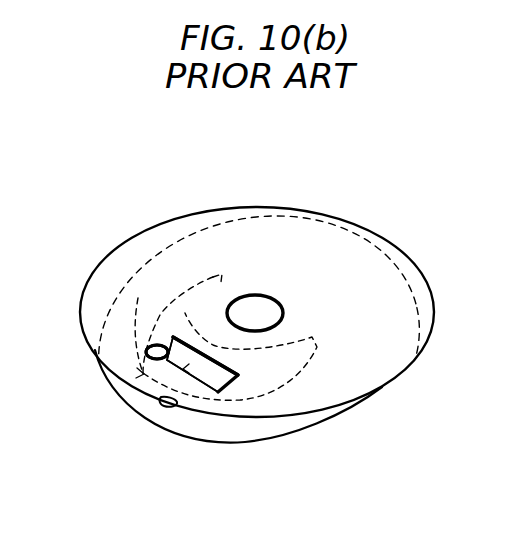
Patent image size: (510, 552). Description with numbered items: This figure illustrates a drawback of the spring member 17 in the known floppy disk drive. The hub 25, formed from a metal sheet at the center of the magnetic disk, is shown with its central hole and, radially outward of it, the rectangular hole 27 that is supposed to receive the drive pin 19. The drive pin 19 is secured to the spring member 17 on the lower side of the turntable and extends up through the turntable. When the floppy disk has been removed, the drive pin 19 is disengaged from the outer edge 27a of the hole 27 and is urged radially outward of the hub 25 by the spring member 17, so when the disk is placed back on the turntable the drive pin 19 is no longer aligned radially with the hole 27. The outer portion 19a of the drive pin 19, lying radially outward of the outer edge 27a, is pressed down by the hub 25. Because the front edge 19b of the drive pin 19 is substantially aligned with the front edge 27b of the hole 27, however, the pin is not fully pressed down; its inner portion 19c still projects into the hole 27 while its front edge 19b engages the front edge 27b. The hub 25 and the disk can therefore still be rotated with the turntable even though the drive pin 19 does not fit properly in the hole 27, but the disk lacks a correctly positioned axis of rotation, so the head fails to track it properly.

The hub 25 is at (393, 244).
The spring member 17 is at (273, 437).
The drive pin 19 is at (167, 400).
The outer portion 19a is at (143, 373).
The front edge 19b is at (156, 345).
The inner portion 19c is at (178, 338).
The rectangular hole 27 is at (230, 392).
The outer edge 27a is at (199, 401).
The front edge 27b is at (172, 337).